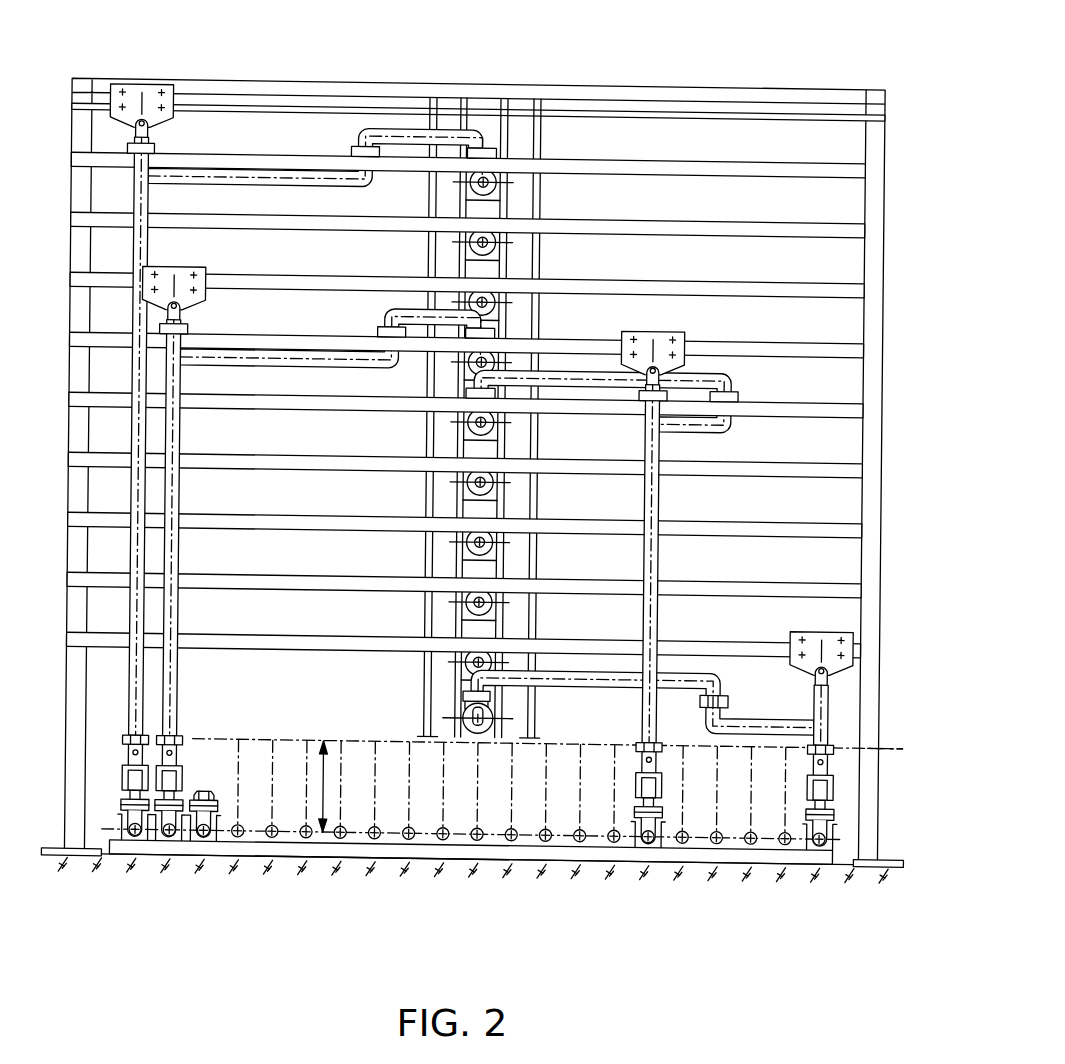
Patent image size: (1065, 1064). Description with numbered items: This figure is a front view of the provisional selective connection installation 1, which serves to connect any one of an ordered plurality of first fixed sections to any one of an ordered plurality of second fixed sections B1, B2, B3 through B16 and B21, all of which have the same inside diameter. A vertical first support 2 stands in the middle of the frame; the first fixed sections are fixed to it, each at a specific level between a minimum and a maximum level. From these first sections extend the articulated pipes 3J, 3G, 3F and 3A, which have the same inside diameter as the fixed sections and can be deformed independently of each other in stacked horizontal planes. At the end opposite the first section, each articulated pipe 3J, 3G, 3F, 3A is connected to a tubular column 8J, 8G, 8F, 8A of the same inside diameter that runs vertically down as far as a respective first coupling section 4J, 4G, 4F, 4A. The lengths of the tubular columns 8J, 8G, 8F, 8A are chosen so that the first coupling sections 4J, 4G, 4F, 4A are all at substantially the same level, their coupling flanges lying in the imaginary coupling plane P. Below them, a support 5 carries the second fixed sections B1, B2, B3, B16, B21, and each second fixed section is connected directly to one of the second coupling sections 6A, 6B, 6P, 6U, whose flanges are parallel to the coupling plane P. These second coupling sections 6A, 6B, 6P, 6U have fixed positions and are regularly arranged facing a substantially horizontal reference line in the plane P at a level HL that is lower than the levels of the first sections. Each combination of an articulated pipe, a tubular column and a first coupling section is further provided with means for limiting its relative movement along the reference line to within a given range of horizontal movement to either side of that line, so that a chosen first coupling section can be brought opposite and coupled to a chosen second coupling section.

The provisional selective connection installation 1 is at (679, 59).
The vertical first support 2 is at (535, 152).
The articulated pipe 3J is at (263, 192).
The tubular column 8J is at (147, 247).
The articulated pipe 3G is at (261, 372).
The tubular column 8G is at (181, 430).
The articulated pipe 3F is at (549, 370).
The tubular column 8F is at (665, 488).
The articulated pipe 3A is at (589, 670).
The tubular column 8A is at (835, 711).
The first coupling section 4J is at (130, 746).
The first coupling section 4G is at (185, 745).
The first coupling section 4F is at (640, 745).
The first coupling section 4A is at (836, 745).
The second coupling section 6A is at (133, 793).
The second coupling section 6B is at (176, 795).
The second coupling section 6P is at (660, 791).
The second coupling section 6U is at (836, 766).
The level of the second coupling sections HL is at (326, 780).
The imaginary coupling plane P is at (892, 748).
The support 5 is at (354, 865).
The second fixed section B1 is at (153, 844).
The second fixed section B2 is at (190, 845).
The second fixed section B3 is at (223, 847).
The second fixed section B16 is at (673, 846).
The second fixed section B21 is at (845, 844).